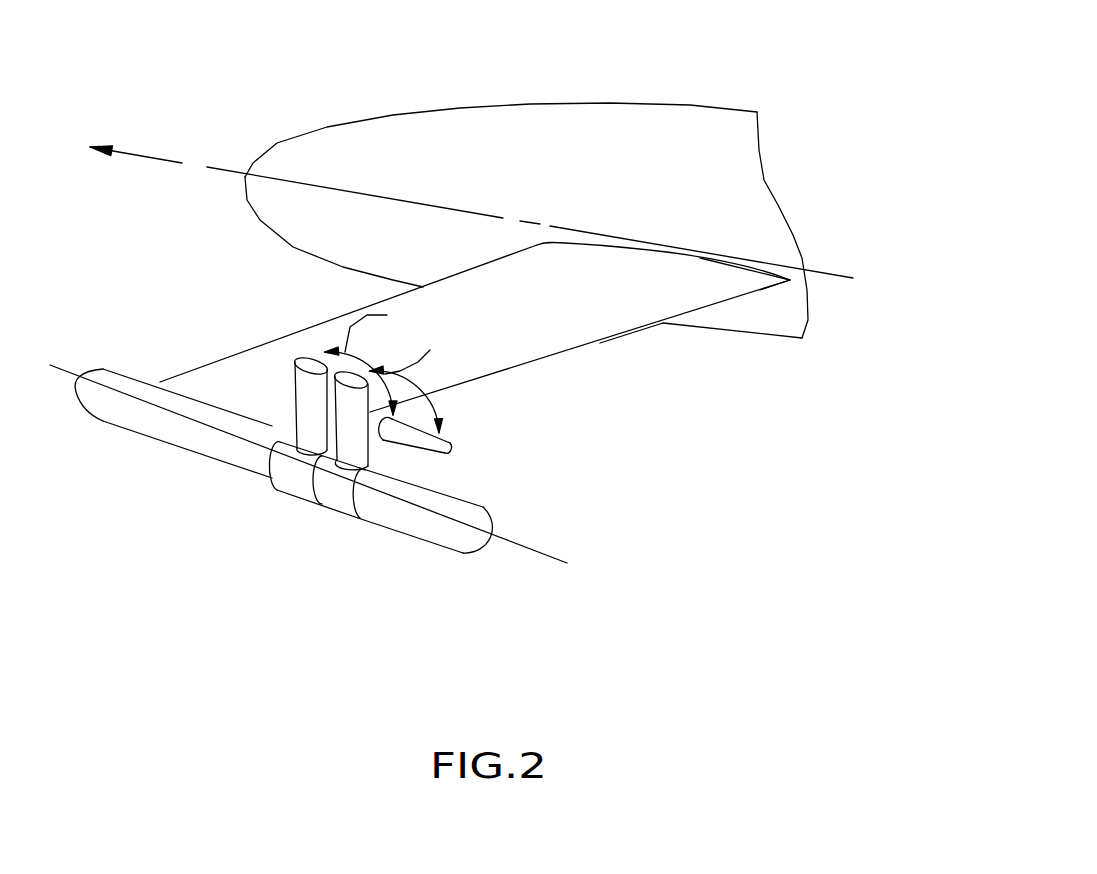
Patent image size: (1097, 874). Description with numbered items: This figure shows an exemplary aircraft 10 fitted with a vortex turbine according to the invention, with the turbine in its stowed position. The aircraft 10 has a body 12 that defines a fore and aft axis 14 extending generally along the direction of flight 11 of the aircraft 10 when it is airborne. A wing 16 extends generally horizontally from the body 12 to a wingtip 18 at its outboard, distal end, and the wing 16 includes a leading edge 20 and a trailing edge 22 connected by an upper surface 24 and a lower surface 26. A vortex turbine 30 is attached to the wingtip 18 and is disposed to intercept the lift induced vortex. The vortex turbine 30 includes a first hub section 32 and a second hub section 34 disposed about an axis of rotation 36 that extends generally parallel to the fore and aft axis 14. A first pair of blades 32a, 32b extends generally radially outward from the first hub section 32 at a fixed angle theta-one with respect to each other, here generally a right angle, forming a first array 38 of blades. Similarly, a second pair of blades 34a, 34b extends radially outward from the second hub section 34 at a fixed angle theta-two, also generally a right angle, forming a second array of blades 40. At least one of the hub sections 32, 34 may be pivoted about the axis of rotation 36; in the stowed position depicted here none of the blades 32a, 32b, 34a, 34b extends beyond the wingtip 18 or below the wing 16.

The aircraft 10 is at (486, 247).
The direction of flight 11 is at (471, 191).
The body 12 is at (545, 220).
The fore and aft axis 14 is at (820, 225).
The wing 16 is at (442, 363).
The wingtip 18 is at (171, 437).
The leading edge 20 is at (316, 313).
The trailing edge 22 is at (580, 356).
The upper surface 24 is at (728, 325).
The lower surface 26 is at (601, 404).
The vortex turbine 30 is at (313, 480).
The first hub section 32 is at (282, 503).
The first blade of first pair 32a is at (225, 437).
The second blade of first pair 32b is at (421, 419).
The second hub section 34 is at (414, 506).
The first blade of second pair 34a is at (457, 510).
The second blade of second pair 34b is at (465, 448).
The axis of rotation 36 is at (308, 493).
The first array of blades 38 is at (264, 286).
The second array of blades 40 is at (473, 343).